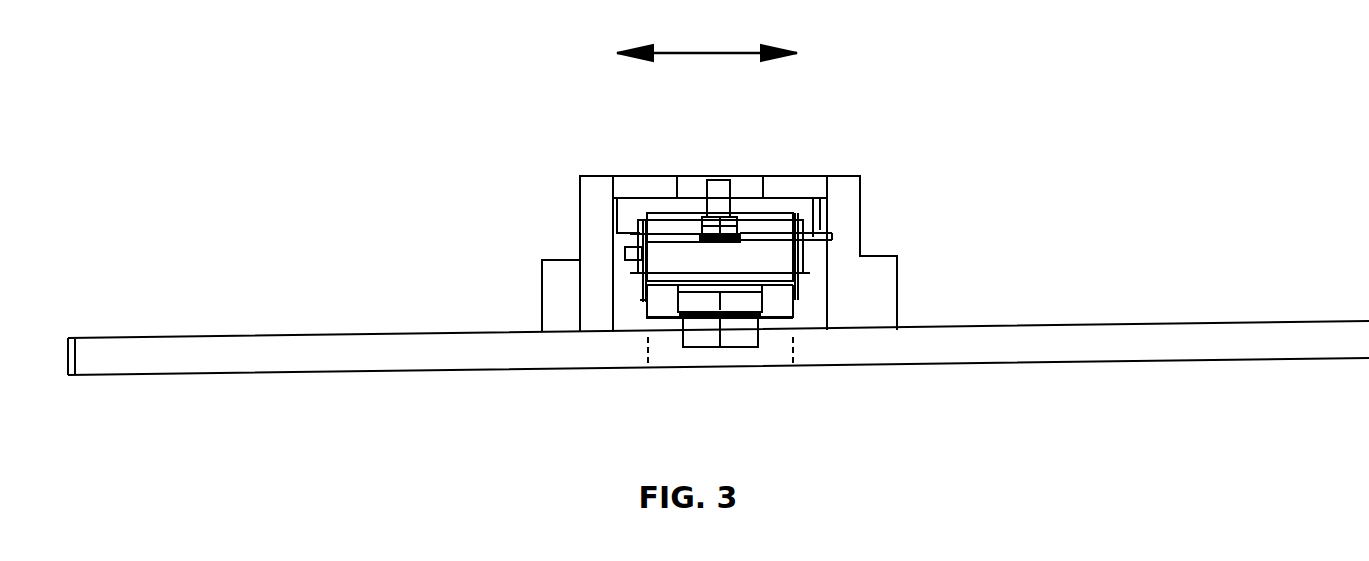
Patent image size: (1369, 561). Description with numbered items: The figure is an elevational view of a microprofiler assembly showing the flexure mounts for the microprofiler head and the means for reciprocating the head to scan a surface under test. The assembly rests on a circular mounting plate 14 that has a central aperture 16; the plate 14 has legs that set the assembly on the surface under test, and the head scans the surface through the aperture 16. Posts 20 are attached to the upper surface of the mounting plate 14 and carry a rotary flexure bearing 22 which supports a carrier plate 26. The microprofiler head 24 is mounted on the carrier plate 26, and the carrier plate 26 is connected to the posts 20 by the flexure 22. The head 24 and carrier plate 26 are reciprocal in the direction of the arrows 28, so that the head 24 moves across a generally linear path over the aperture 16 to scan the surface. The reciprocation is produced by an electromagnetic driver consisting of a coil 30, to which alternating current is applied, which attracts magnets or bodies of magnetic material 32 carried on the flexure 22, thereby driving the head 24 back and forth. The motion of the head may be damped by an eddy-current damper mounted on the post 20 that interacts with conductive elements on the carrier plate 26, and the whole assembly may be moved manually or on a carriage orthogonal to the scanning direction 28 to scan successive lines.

The mounting plate 14 is at (988, 327).
The central aperture 16 is at (648, 358).
The posts 20 is at (847, 207).
The rotary flexure bearing 22 is at (730, 182).
The microprofiler head 24 is at (740, 222).
The carrier plate 26 is at (657, 196).
The arrows 28 is at (707, 39).
The coil 30 is at (820, 280).
The magnets or bodies of magnetic material 32 is at (647, 260).